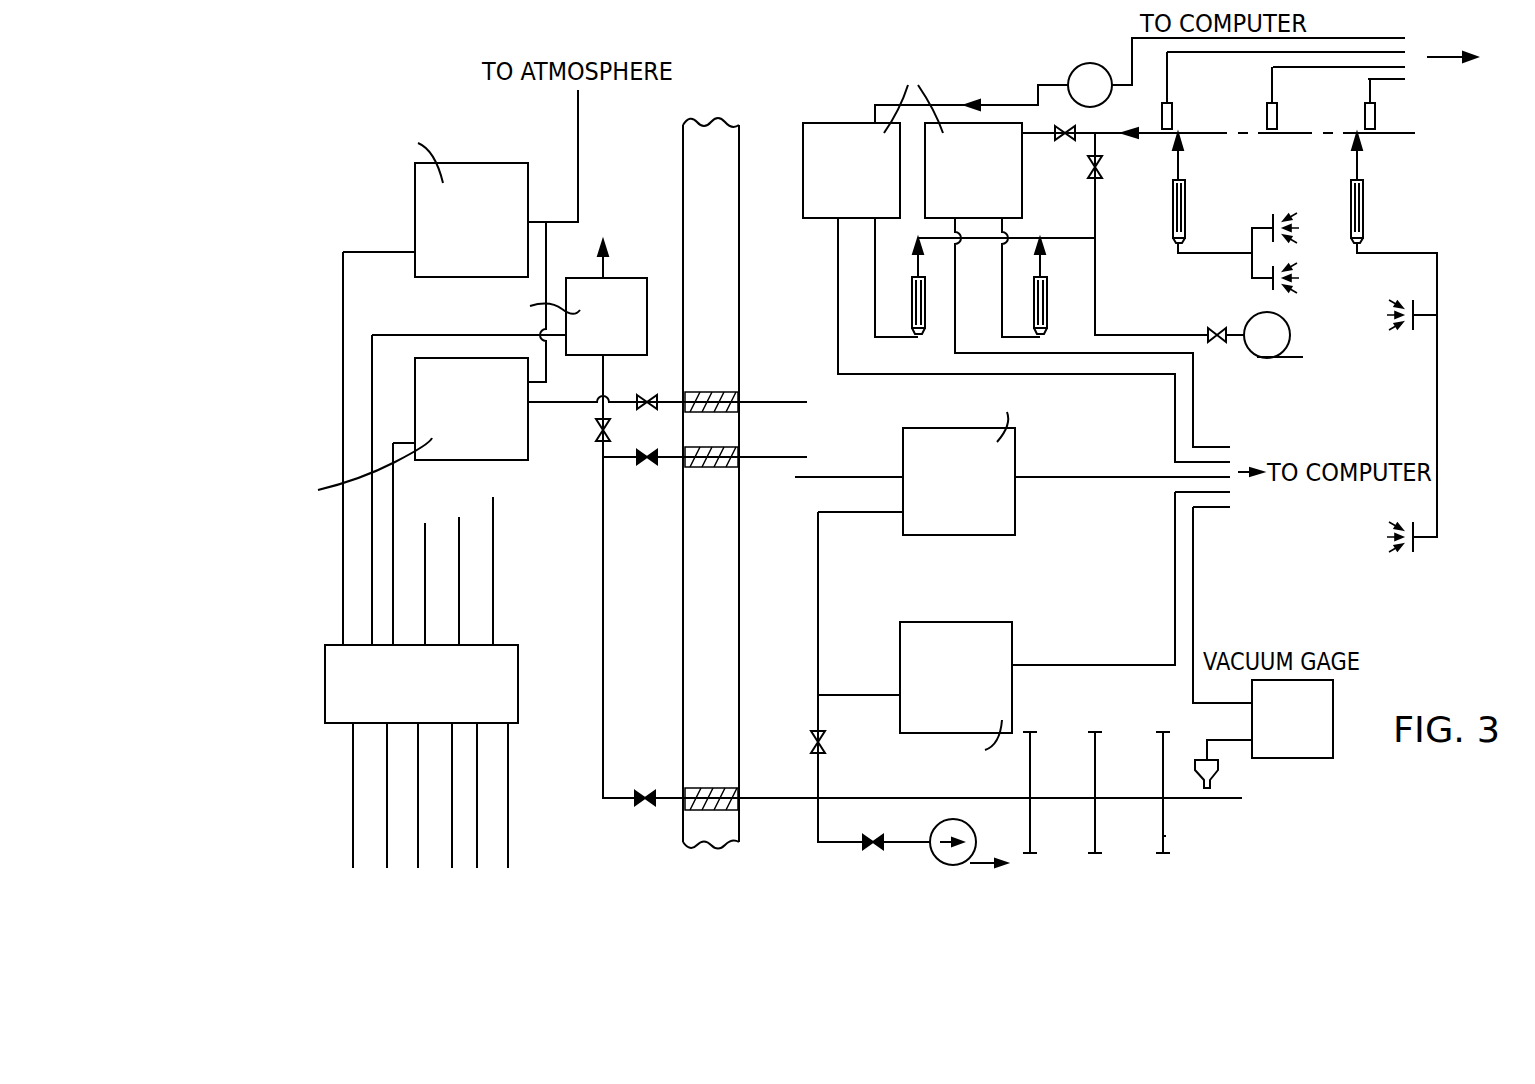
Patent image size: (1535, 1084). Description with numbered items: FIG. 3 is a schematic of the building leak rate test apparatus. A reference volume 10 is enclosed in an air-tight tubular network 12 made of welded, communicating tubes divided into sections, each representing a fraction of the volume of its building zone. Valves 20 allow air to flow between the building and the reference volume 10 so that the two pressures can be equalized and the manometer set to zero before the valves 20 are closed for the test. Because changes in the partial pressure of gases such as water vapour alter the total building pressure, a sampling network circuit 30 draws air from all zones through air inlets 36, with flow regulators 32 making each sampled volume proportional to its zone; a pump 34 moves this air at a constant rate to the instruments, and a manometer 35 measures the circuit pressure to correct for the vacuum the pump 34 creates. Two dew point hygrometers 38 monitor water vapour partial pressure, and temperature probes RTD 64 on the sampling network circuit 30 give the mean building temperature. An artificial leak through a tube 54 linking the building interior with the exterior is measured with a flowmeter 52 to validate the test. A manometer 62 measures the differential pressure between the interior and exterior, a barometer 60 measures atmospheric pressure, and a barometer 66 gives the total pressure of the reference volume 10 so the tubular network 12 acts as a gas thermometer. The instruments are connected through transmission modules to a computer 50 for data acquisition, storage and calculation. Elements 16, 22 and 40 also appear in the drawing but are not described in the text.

The reference volume 10 is at (1042, 764).
The tubular network 12 is at (1166, 836).
The pump 16 is at (955, 858).
The valves 20 is at (647, 465).
The manometer 0-7 kPa 22 is at (918, 523).
The sampling network circuit 30 is at (1243, 254).
The flow regulators 32 is at (1185, 208).
The pump 34 is at (1268, 345).
The manometer 35 is at (1090, 70).
The air inlets 36 is at (1270, 220).
The dew point hygrometers 38 is at (932, 193).
The sensor probe 40 is at (912, 315).
The computer 50 is at (512, 703).
The flowmeter 52 is at (608, 347).
The tube 54 is at (783, 402).
The barometer 60 is at (500, 180).
The manometer 62 is at (528, 423).
The temperature probes RTD 64 is at (1160, 117).
The barometer 66 is at (925, 633).